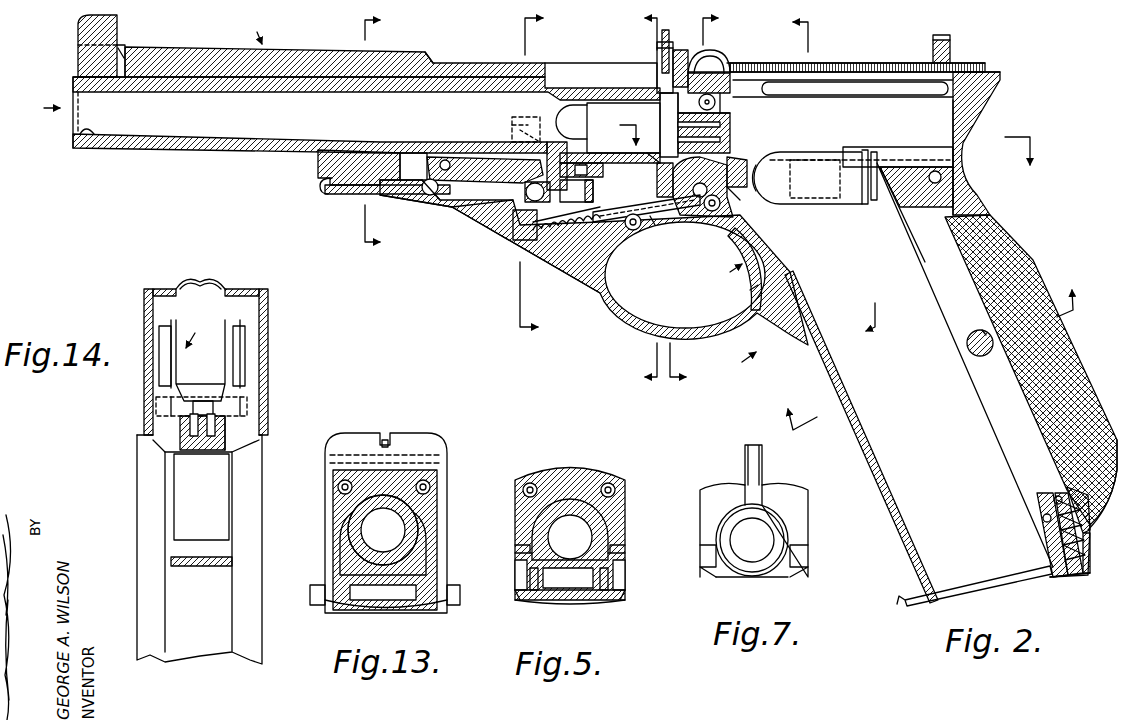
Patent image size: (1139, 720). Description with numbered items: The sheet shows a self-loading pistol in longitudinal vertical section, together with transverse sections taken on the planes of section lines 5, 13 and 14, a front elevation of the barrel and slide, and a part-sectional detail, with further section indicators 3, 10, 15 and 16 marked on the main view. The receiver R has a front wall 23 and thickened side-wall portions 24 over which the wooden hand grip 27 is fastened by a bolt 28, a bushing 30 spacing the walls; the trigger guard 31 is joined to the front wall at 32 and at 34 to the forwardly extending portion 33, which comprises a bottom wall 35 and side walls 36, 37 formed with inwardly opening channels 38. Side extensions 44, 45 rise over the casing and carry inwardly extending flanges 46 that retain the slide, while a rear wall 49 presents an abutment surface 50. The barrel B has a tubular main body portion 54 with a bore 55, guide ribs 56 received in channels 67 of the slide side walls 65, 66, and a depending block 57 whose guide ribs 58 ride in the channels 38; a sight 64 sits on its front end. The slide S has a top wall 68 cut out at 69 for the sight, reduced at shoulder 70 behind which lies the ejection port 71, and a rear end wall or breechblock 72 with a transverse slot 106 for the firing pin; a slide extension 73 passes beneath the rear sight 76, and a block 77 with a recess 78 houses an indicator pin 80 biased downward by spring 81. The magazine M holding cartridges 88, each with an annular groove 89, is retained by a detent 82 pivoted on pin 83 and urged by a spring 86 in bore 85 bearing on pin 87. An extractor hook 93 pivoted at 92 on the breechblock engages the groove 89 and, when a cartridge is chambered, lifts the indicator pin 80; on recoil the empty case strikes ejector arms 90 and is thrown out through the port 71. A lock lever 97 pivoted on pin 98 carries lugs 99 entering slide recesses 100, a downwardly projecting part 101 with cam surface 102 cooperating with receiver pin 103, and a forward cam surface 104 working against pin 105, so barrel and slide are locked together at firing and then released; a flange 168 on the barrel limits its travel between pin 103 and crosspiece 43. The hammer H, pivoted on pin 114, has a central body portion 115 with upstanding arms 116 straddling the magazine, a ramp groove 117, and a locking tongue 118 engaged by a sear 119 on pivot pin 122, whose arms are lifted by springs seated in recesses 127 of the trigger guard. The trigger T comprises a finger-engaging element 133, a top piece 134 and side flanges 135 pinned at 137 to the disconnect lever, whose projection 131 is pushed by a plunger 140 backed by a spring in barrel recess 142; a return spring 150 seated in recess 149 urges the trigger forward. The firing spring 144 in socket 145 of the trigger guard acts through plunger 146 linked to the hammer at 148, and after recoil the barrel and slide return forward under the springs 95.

In FIG. 2, the front wall 23 is at (880, 514).
In FIG. 2, the thickened portions of side walls 24 is at (957, 250).
In FIG. 2, the wooden hand grip 27 is at (1010, 265).
In FIG. 2, the bolt 28 is at (967, 346).
In FIG. 2, the bushing 30 is at (978, 356).
In FIG. 2, the trigger guard 31 is at (583, 290).
In FIG. 2, the joint of trigger guard to front wall 32 is at (795, 335).
In FIG. 2, the forwardly extending portion of receiver 33 is at (320, 187).
In FIG. 2, the joint of trigger guard to forward portion 34 is at (556, 266).
In FIG. 2, the bottom wall 35 is at (345, 194).
In FIG. 5, the bottom wall 35 is at (568, 604).
In FIG. 5, the side wall 36 is at (516, 568).
In FIG. 14, the side wall 37 is at (200, 568).
In FIG. 5, the side wall 37 is at (622, 572).
In FIG. 5, the front channels 38 is at (610, 580).
In FIG. 2, the crosspiece 43 is at (588, 191).
In FIG. 14, the side extension 44 is at (144, 326).
In FIG. 14, the side extension 45 is at (268, 325).
In FIG. 14, the inwardly extending flanges 46 is at (255, 289).
In FIG. 2, the rear wall 49 is at (975, 119).
In FIG. 2, the abutment surface 50 is at (960, 145).
In FIG. 2, the tubular main body portion 54 is at (172, 77).
In FIG. 7, the tubular main body portion 54 is at (770, 580).
In FIG. 2, the bore 55 is at (80, 131).
In FIG. 5, the bore 55 is at (568, 513).
In FIG. 7, the bore 55 is at (745, 556).
In FIG. 5, the guide ribs 56 is at (612, 546).
In FIG. 7, the guide ribs 56 is at (795, 560).
In FIG. 2, the block 57 is at (320, 166).
In FIG. 5, the guide ribs 58 is at (620, 600).
In FIG. 2, the sight 64 is at (78, 50).
In FIG. 7, the sight 64 is at (758, 472).
In FIG. 7, the side wall 65 is at (722, 485).
In FIG. 7, the side wall 66 is at (790, 487).
In FIG. 5, the channels 67 is at (612, 553).
In FIG. 2, the top wall 68 is at (205, 55).
In FIG. 5, the top wall 68 is at (590, 475).
In FIG. 2, the cutout 69 is at (122, 48).
In FIG. 2, the shoulder 70 is at (432, 57).
In FIG. 2, the ejection port 71 is at (552, 72).
In FIG. 2, the rear end wall 72 is at (735, 131).
In FIG. 2, the slide extension 73 is at (856, 65).
In FIG. 14, the slide extension 73 is at (205, 281).
In FIG. 2, the rear sight 76 is at (952, 50).
In FIG. 13, the rear sight 76 is at (420, 435).
In FIG. 2, the block 77 is at (656, 62).
In FIG. 13, the block 77 is at (360, 458).
In FIG. 2, the recess 78 is at (659, 52).
In FIG. 2, the indicator pin 80 is at (662, 37).
In FIG. 13, the indicator pin 80 is at (388, 436).
In FIG. 2, the expansion coil spring 81 is at (679, 52).
In FIG. 2, the detent 82 is at (1070, 580).
In FIG. 2, the pin 83 is at (1040, 524).
In FIG. 2, the bore 85 is at (1086, 553).
In FIG. 2, the expansion coil spring 86 is at (1091, 530).
In FIG. 2, the pin 87 is at (1055, 496).
In FIG. 2, the cartridges 88 is at (822, 205).
In FIG. 2, the annular groove 89 is at (868, 206).
In FIG. 2, the ejector arms 90 is at (905, 152).
In FIG. 2, the extractor pivot 92 is at (717, 102).
In FIG. 2, the extractor 93 is at (672, 114).
In FIG. 13, the springs 95 is at (430, 486).
In FIG. 5, the springs 95 is at (616, 486).
In FIG. 2, the lock 97 is at (440, 184).
In FIG. 13, the lock 97 is at (380, 590).
In FIG. 2, the pin 98 is at (447, 160).
In FIG. 2, the lugs 99 is at (512, 128).
In FIG. 13, the lugs 99 is at (430, 540).
In FIG. 2, the recesses 100 is at (520, 117).
In FIG. 13, the recesses 100 is at (440, 518).
In FIG. 2, the downwardly projecting part 101 is at (525, 178).
In FIG. 13, the downwardly projecting part 101 is at (395, 600).
In FIG. 2, the cam surface 102 is at (472, 171).
In FIG. 2, the pin 103 is at (492, 220).
In FIG. 13, the pin 103 is at (350, 605).
In FIG. 2, the cam surface 104 is at (405, 196).
In FIG. 2, the pin 105 is at (428, 197).
In FIG. 2, the transverse slot 106 is at (735, 118).
In FIG. 2, the pivot pin 114 is at (710, 228).
In FIG. 14, the pivot pin 114 is at (156, 404).
In FIG. 2, the central main body portion 115 is at (727, 172).
In FIG. 14, the central main body portion 115 is at (194, 385).
In FIG. 2, the arms 116 is at (735, 148).
In FIG. 14, the arms 116 is at (236, 330).
In FIG. 14, the groove 117 is at (208, 400).
In FIG. 14, the locking tongue 118 is at (216, 452).
In FIG. 2, the sear 119 is at (650, 153).
In FIG. 2, the pivot pin 122 is at (695, 226).
In FIG. 2, the recesses 127 is at (633, 231).
In FIG. 2, the projection 131 is at (590, 152).
In FIG. 2, the finger-engaging element 133 is at (752, 292).
In FIG. 14, the finger-engaging element 133 is at (180, 508).
In FIG. 14, the top piece 134 is at (188, 452).
In FIG. 14, the side flanges 135 is at (145, 445).
In FIG. 2, the pin 137 is at (656, 236).
In FIG. 2, the plunger 140 is at (600, 163).
In FIG. 2, the recess 142 is at (535, 135).
In FIG. 2, the expansion coil spring 144 is at (527, 238).
In FIG. 2, the socket 145 is at (512, 232).
In FIG. 2, the plunger 146 is at (598, 206).
In FIG. 2, the link connection to hammer 148 is at (720, 203).
In FIG. 2, the recess 149 is at (718, 242).
In FIG. 2, the expansion coil spring 150 is at (770, 206).
In FIG. 2, the flange 168 is at (566, 166).
In FIG. 2, the section line 3 is at (821, 156).
In FIG. 2, the section line 5— 5 is at (384, 132).
In FIG. 2, the section line 10 is at (639, 199).
In FIG. 2, the section line 13— 13 is at (543, 174).
In FIG. 2, the section line 14— 14 is at (709, 199).
In FIG. 2, the section line 15 is at (923, 346).
In FIG. 2, the section line 16 is at (822, 181).
In FIG. 2, the barrel B is at (44, 108).
In FIG. 2, the slide S is at (255, 29).
In FIG. 2, the trigger T is at (740, 269).
In FIG. 2, the receiver R is at (741, 363).
In FIG. 2, the magazine M is at (965, 588).
In FIG. 14, the hammer H is at (195, 332).